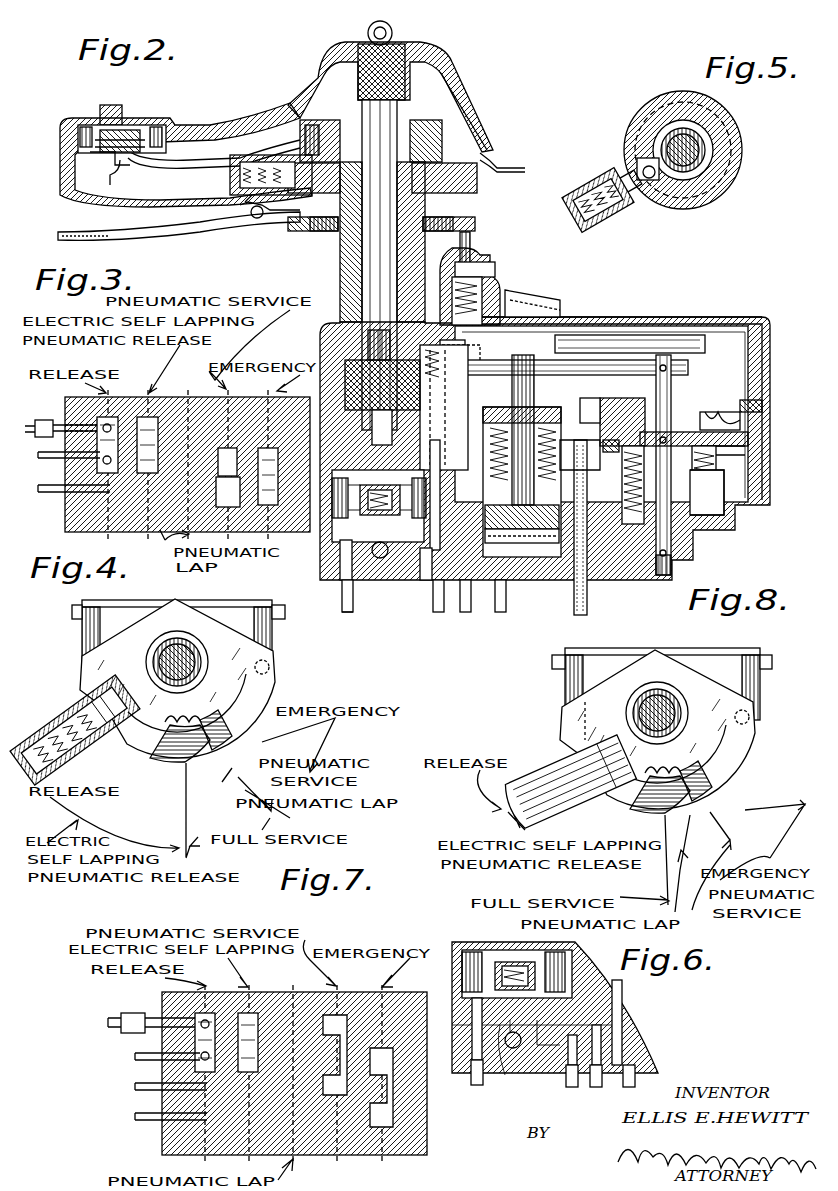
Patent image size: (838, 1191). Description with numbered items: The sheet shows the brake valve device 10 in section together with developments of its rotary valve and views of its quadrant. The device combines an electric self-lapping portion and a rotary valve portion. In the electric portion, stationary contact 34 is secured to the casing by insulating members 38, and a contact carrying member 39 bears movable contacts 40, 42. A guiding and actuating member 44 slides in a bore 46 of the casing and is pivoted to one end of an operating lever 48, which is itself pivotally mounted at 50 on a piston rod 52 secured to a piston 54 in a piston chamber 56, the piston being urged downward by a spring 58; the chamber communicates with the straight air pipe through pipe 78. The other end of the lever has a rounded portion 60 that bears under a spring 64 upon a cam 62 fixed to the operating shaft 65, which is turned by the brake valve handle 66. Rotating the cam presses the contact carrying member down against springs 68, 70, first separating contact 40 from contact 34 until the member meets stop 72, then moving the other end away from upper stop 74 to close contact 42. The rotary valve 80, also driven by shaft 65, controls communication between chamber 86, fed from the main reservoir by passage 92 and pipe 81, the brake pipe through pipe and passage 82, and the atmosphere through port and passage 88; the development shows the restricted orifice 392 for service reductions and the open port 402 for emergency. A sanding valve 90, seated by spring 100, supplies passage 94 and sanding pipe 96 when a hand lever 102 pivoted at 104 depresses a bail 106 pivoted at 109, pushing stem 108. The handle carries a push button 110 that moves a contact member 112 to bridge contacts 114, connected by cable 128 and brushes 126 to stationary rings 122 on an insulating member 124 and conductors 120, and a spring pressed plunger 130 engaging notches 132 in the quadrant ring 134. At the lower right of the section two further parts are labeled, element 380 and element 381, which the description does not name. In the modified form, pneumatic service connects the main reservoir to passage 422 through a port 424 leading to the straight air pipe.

In FIG. 2, the brake valve device 10 is at (702, 309).
In FIG. 2, the stationary contact 34 is at (715, 420).
In FIG. 2, the insulating members 38 is at (762, 406).
In FIG. 2, the contact carrying member 39 is at (686, 440).
In FIG. 2, the movable contact 40 is at (735, 436).
In FIG. 2, the movable contact 42 is at (612, 440).
In FIG. 2, the guiding and actuating member 44 is at (672, 402).
In FIG. 2, the bore 46 is at (658, 565).
In FIG. 2, the operating lever 48 is at (640, 372).
In FIG. 2, the pivot 50 is at (552, 355).
In FIG. 2, the piston rod 52 is at (530, 410).
In FIG. 2, the piston 54 is at (520, 543).
In FIG. 2, the piston chamber 56 is at (500, 530).
In FIG. 2, the spring 58 is at (500, 408).
In FIG. 2, the rounded portion 60 is at (430, 388).
In FIG. 2, the cam 62 is at (378, 385).
In FIG. 2, the spring 64 is at (470, 350).
In FIG. 2, the operating shaft 65 is at (375, 275).
In FIG. 5, the operating shaft 65 is at (692, 150).
In FIG. 2, the brake valve handle 66 is at (228, 122).
In FIG. 2, the spring 68 is at (716, 462).
In FIG. 2, the spring 70 is at (632, 525).
In FIG. 2, the stop 72 is at (726, 476).
In FIG. 2, the upper stop 74 is at (612, 408).
In FIG. 2, the pipe 78 is at (505, 600).
In FIG. 6, the pipe 78 is at (630, 1085).
In FIG. 2, the rotary valve 80 is at (418, 528).
In FIG. 2, the pipe 81 is at (438, 600).
In FIG. 3, the pipe 81 is at (26, 425).
In FIG. 7, the pipe 81 is at (145, 1009).
In FIG. 6, the pipe 81 is at (573, 1087).
In FIG. 2, the pipe and passage 82 is at (350, 600).
In FIG. 3, the pipe and passage 82 is at (65, 447).
In FIG. 7, the pipe and passage 82 is at (132, 1054).
In FIG. 6, the pipe and passage 82 is at (478, 1085).
In FIG. 2, the chamber 86 is at (348, 480).
In FIG. 3, the chamber 86 is at (44, 420).
In FIG. 7, the chamber 86 is at (133, 1013).
In FIG. 6, the chamber 86 is at (472, 950).
In FIG. 2, the port and passage 88 is at (381, 560).
In FIG. 3, the port and passage 88 is at (70, 480).
In FIG. 7, the port and passage 88 is at (134, 1114).
In FIG. 6, the port and passage 88 is at (513, 1050).
In FIG. 2, the sanding valve 90 is at (495, 268).
In FIG. 2, the passage 92 is at (435, 460).
In FIG. 2, the passage 94 is at (550, 305).
In FIG. 2, the sanding pipe 96 is at (466, 600).
In FIG. 6, the sanding pipe 96 is at (596, 1087).
In FIG. 2, the spring 100 is at (484, 292).
In FIG. 2, the hand lever 102 is at (222, 222).
In FIG. 2, the pivot 104 is at (258, 220).
In FIG. 2, the bail 106 is at (298, 232).
In FIG. 4, the bail 106 is at (270, 712).
In FIG. 8, the bail 106 is at (657, 731).
In FIG. 2, the stem 108 is at (472, 238).
In FIG. 4, the stem 108 is at (270, 665).
In FIG. 8, the stem 108 is at (750, 716).
In FIG. 4, the pivot 109 is at (278, 605).
In FIG. 8, the pivot 109 is at (662, 684).
In FIG. 2, the push button 110 is at (118, 112).
In FIG. 2, the contact member 112 is at (140, 130).
In FIG. 2, the contacts 114 is at (105, 162).
In FIG. 2, the conductors 120 is at (512, 170).
In FIG. 2, the stationary rings 122 is at (330, 128).
In FIG. 5, the stationary rings 122 is at (702, 208).
In FIG. 2, the insulating member 124 is at (440, 140).
In FIG. 5, the insulating member 124 is at (720, 178).
In FIG. 2, the brushes 126 is at (312, 130).
In FIG. 5, the brushes 126 is at (632, 195).
In FIG. 2, the cable 128 is at (227, 160).
In FIG. 5, the cable 128 is at (582, 222).
In FIG. 2, the spring pressed plunger 130 is at (300, 195).
In FIG. 4, the spring pressed plunger 130 is at (95, 690).
In FIG. 8, the spring pressed plunger 130 is at (569, 783).
In FIG. 4, the notches 132 is at (180, 710).
In FIG. 2, the quadrant ring 134 is at (478, 180).
In FIG. 4, the quadrant ring 134 is at (215, 715).
In FIG. 8, the quadrant ring 134 is at (657, 713).
In FIG. 2, the rod 380 is at (574, 537).
In FIG. 2, the guide 381 is at (582, 606).
In FIG. 3, the restricted orifice 392 is at (222, 448).
In FIG. 3, the open port 402 is at (270, 448).
In FIG. 7, the passage 422 is at (134, 1085).
In FIG. 6, the passage 422 is at (545, 1045).
In FIG. 7, the port 424 is at (345, 1015).